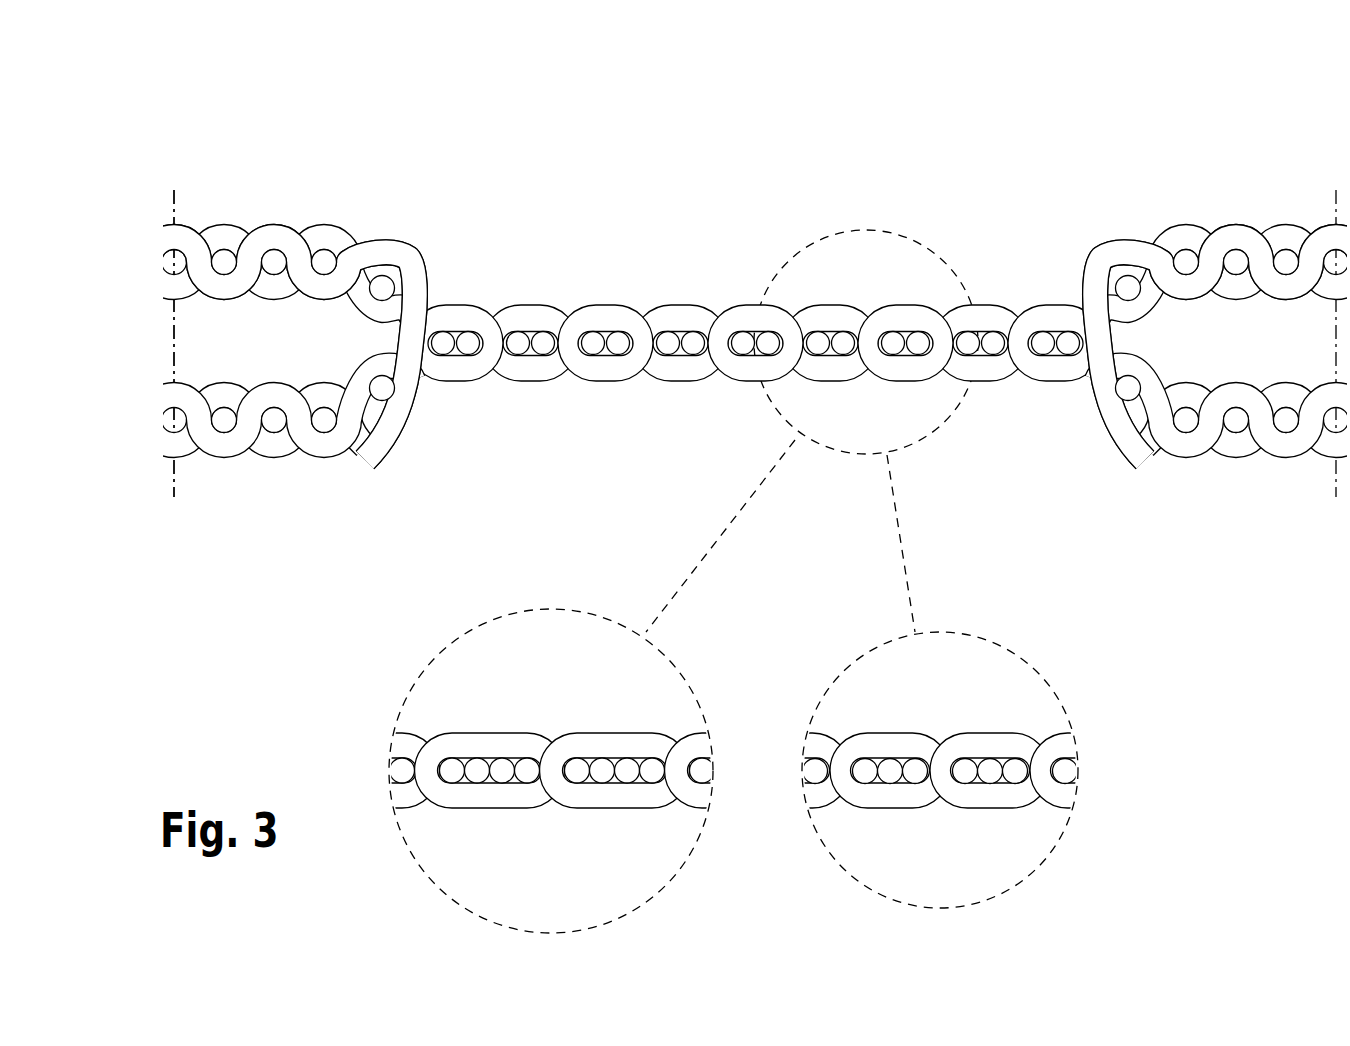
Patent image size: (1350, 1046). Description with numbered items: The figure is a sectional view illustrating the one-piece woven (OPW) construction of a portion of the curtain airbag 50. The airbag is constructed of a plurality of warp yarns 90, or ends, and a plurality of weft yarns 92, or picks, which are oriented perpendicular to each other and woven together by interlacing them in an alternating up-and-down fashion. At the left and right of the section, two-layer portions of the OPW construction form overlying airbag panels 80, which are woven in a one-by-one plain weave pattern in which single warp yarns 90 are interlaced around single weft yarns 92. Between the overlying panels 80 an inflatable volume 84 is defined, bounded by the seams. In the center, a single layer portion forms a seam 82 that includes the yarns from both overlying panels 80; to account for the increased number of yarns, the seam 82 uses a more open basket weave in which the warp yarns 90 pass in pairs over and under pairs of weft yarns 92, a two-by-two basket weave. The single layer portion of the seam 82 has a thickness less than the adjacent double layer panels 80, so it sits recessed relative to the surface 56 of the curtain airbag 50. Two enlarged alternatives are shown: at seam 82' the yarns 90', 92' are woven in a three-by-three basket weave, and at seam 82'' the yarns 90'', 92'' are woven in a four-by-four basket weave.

The curtain airbag 50 is at (475, 160).
The surface 56 is at (209, 203).
The panels 80 is at (254, 162).
The seam 82 is at (755, 281).
The inflatable volume 84 is at (273, 355).
The warp yarns 90 is at (709, 343).
The weft yarns 92 is at (755, 341).
The seam 82' is at (940, 775).
The warp yarns 90' is at (940, 733).
The weft yarns 92' is at (963, 781).
The seam 82'' is at (540, 771).
The warp yarns 90'' is at (552, 721).
The weft yarns 92'' is at (552, 773).